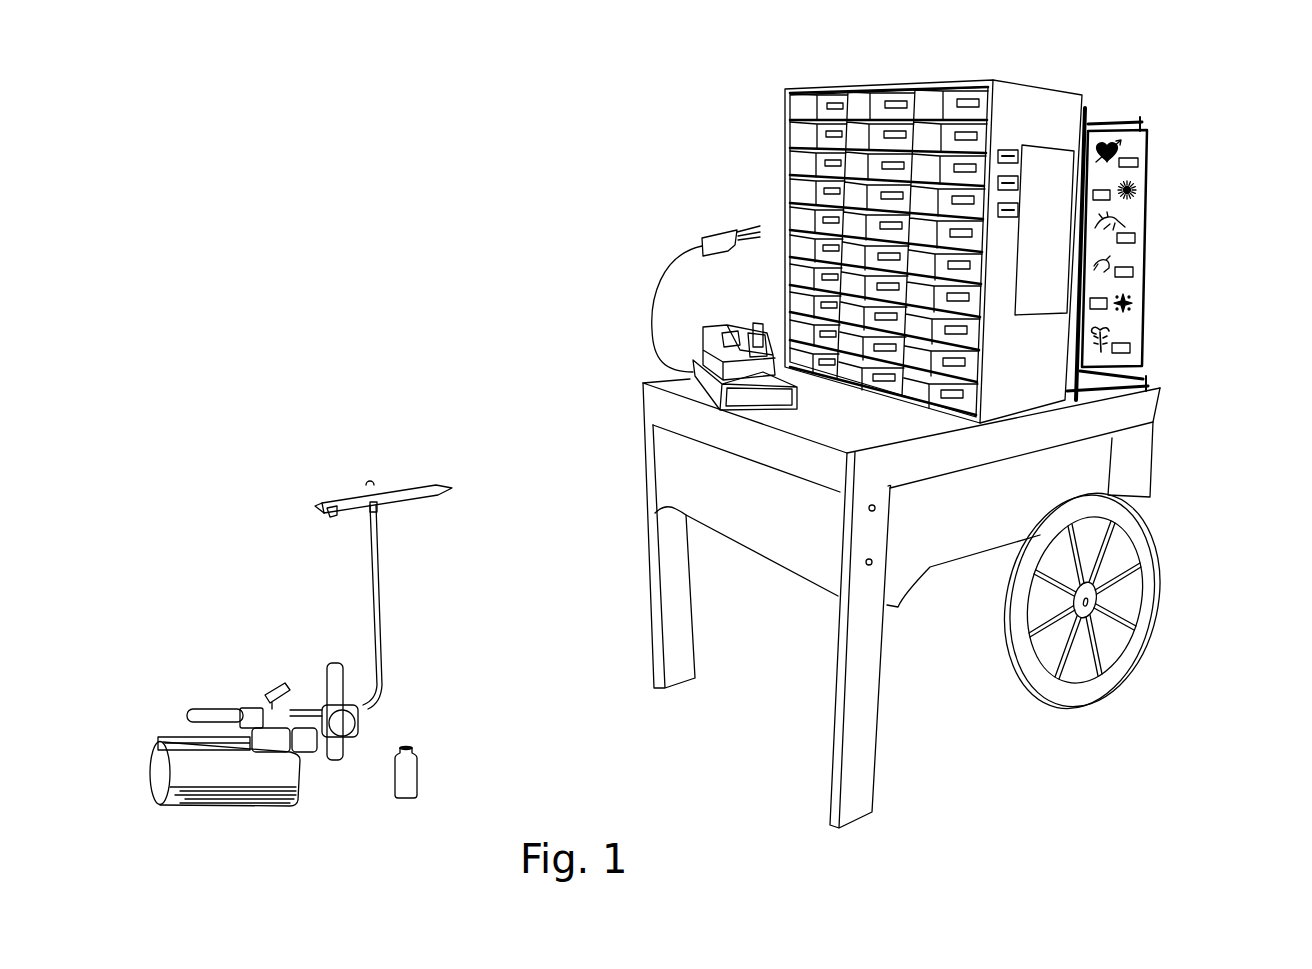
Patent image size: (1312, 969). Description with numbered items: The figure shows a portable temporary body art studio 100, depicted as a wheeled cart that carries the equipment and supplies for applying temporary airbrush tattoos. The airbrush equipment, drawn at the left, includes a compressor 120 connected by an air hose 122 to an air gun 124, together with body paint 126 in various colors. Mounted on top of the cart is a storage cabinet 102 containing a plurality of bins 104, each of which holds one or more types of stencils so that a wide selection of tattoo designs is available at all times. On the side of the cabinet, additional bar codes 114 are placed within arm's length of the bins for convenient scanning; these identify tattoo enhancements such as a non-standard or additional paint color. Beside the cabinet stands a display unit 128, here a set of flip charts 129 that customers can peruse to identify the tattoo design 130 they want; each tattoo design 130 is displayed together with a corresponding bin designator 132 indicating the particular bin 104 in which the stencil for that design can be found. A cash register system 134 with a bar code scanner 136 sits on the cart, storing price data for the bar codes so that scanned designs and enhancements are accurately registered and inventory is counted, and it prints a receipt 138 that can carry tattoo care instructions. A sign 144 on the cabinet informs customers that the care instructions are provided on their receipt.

The temporary body art studio 100 is at (1188, 427).
The storage cabinet 102 is at (820, 88).
The bins 104 is at (966, 100).
The additional bar codes 114 is at (1006, 150).
The compressor 120 is at (182, 738).
The air hose 122 is at (380, 620).
The air guns 124 is at (395, 488).
The body paint 126 is at (418, 772).
The display unit 128 is at (1164, 227).
The flip charts 129 is at (1135, 362).
The tattoo designs 130 is at (1117, 152).
The bin designator 132 is at (1138, 162).
The cash register system 134 is at (798, 392).
The bar code scanner 136 is at (712, 236).
The receipt 138 is at (755, 322).
The sign 144 is at (1045, 316).